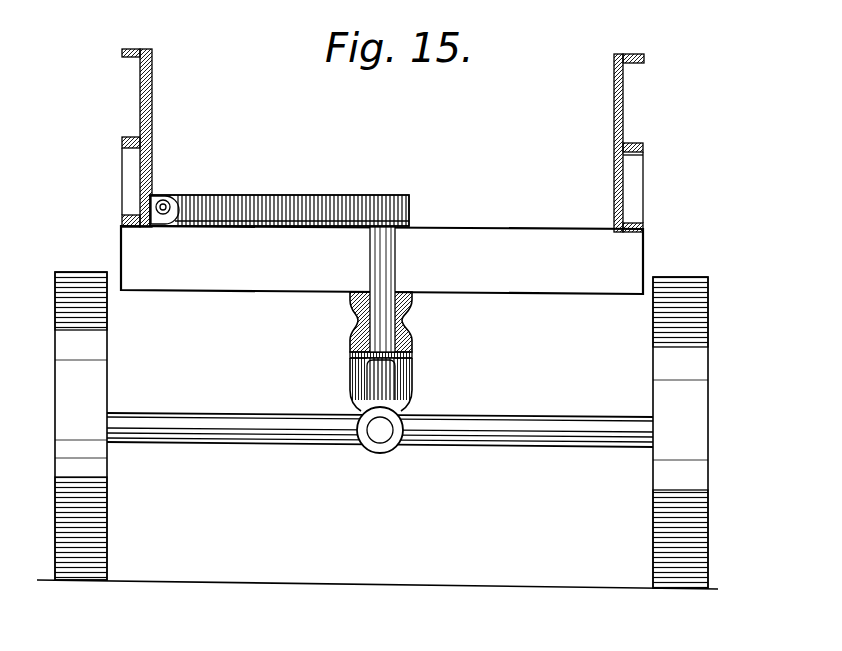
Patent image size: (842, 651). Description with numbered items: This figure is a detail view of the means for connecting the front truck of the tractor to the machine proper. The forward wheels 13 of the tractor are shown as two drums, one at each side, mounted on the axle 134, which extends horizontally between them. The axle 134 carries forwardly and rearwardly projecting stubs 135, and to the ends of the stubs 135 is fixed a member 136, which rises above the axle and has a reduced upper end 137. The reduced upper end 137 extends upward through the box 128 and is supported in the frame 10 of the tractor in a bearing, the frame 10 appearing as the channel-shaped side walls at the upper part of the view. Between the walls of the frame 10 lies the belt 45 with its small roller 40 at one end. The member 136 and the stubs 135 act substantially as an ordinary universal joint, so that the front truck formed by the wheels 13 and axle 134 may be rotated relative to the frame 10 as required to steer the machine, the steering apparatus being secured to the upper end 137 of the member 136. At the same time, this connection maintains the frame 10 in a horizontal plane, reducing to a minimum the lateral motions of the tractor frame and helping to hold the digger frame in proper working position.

The frame of the tractor 10 is at (152, 103).
The forward wheels 13 is at (660, 352).
The bevel gear 40 is at (167, 203).
The belt 45 is at (273, 198).
The table box 128 is at (382, 260).
The axle 134 is at (208, 422).
The stubs 135 is at (386, 426).
The member 136 is at (404, 318).
The reduced upper end 137 is at (377, 267).